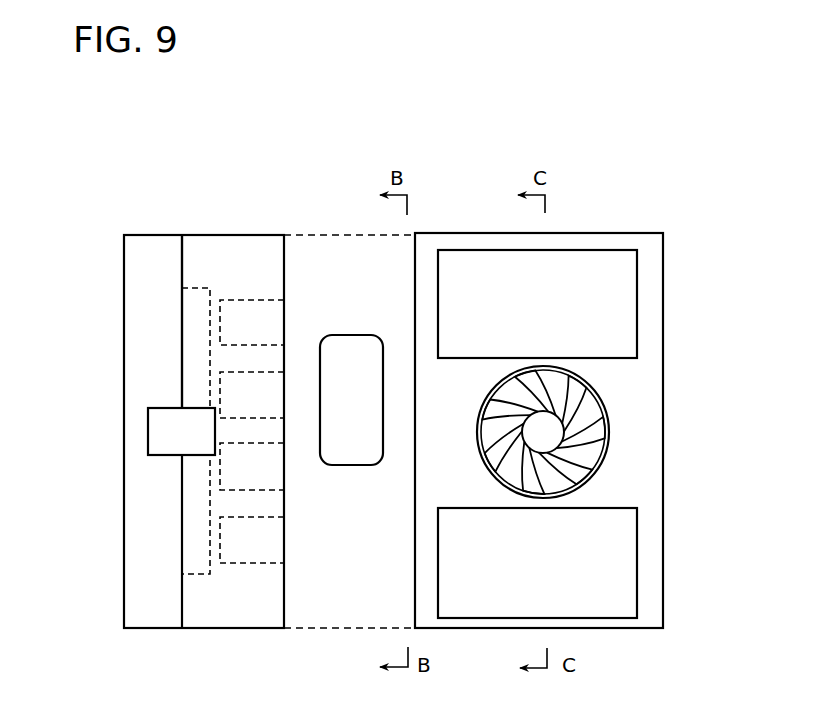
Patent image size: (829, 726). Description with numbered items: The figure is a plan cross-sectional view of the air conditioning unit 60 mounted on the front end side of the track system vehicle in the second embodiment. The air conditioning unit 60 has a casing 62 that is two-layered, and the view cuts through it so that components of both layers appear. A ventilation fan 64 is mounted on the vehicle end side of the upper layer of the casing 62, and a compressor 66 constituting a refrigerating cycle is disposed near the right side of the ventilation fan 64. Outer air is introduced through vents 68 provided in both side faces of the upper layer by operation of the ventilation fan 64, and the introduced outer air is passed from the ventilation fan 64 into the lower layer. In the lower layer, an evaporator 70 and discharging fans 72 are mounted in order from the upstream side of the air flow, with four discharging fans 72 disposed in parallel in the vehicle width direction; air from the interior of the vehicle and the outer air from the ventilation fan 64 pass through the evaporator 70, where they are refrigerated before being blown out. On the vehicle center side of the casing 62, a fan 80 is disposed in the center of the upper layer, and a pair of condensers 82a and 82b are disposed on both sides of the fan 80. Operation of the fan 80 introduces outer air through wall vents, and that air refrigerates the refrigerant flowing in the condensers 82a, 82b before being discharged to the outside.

The air conditioning unit 60 is at (249, 222).
The casing 62 is at (605, 228).
The ventilation fan 64 is at (155, 432).
The compressor 66 is at (383, 330).
The vents 68 is at (299, 302).
The evaporator 70 is at (195, 548).
The discharging fans 72 is at (230, 298).
The fan 80 is at (597, 435).
The condenser 82a is at (628, 300).
The condenser 82b is at (628, 562).